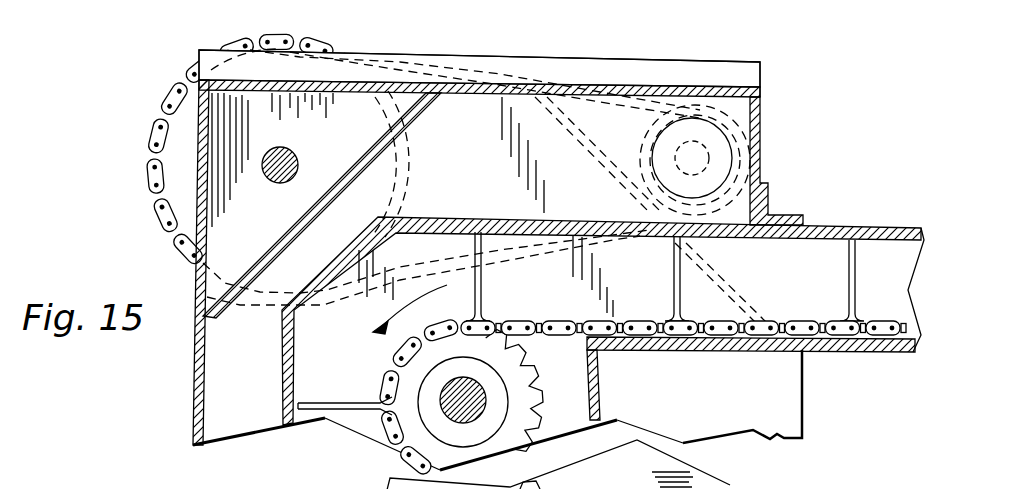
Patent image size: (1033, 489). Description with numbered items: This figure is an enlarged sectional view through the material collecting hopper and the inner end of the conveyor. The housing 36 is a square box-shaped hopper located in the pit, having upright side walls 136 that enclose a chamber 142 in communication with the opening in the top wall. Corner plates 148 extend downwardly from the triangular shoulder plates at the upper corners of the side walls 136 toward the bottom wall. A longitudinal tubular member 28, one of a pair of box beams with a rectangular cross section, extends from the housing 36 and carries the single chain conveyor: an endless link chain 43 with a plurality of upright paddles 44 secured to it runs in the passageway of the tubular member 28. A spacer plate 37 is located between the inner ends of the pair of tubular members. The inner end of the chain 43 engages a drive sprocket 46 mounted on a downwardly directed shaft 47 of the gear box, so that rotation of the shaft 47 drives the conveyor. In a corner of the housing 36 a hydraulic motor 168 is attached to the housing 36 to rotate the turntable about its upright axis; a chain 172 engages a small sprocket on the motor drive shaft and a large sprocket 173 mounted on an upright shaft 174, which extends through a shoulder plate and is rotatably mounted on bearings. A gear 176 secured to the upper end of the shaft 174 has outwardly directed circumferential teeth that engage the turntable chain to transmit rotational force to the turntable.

The tubular member 28 is at (893, 232).
The housing 36 is at (164, 401).
The spacer plate 37 is at (599, 388).
The endless link chain 43 is at (863, 352).
The upright paddles 44 is at (856, 270).
The drive sprocket 46 is at (410, 450).
The shaft 47 is at (468, 400).
The side walls 136 is at (727, 90).
The chamber 142 is at (350, 360).
The corner plates 148 is at (366, 150).
The hydraulic motor 168 is at (670, 148).
The chain 172 is at (300, 34).
The large sprocket 173 is at (184, 138).
The upright shaft 174 is at (293, 147).
The gear 176 is at (570, 488).